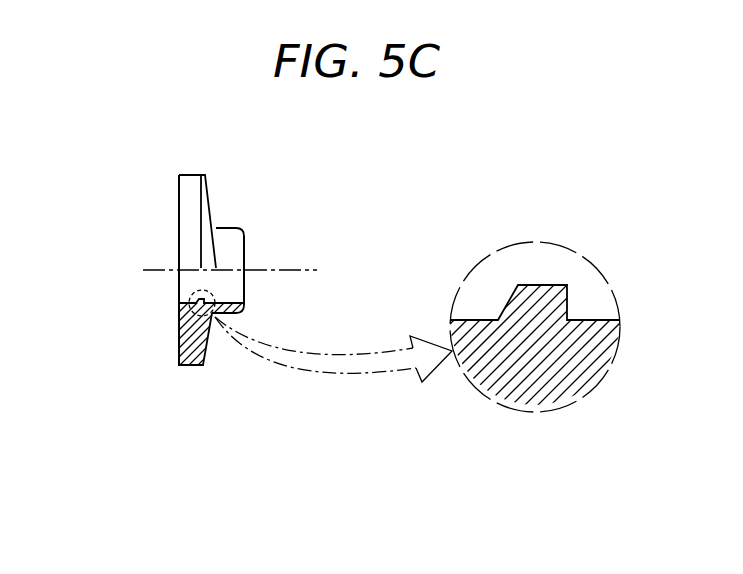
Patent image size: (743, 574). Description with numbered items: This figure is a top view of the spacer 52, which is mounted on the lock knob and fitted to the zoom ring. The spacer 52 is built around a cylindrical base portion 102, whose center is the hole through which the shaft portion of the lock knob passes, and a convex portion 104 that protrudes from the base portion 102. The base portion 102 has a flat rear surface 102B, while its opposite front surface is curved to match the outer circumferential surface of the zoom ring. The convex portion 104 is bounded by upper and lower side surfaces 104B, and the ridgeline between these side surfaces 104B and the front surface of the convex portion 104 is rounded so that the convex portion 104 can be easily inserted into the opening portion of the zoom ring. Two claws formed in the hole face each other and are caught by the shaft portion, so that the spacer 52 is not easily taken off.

The spacer 52 is at (349, 200).
The base portion 102 is at (188, 199).
The rear surface 102B is at (178, 229).
The convex portion 104 is at (241, 245).
The upper and lower side surfaces 104B is at (240, 262).